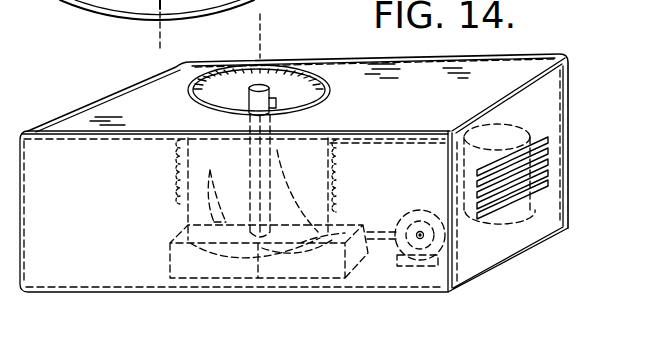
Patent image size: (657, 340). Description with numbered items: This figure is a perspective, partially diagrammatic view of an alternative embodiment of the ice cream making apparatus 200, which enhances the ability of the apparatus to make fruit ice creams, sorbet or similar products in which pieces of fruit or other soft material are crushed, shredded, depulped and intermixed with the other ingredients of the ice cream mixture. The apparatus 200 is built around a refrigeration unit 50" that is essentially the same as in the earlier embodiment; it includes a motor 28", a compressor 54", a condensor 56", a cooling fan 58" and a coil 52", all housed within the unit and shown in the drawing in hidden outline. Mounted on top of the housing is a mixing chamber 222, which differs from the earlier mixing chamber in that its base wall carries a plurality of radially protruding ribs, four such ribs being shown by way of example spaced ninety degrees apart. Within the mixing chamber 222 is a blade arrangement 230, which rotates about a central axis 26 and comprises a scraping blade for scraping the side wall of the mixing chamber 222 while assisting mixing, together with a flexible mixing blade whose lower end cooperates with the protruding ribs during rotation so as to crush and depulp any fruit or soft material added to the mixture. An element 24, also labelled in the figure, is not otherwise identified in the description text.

The apparatus 200 is at (160, 88).
The knob 24 is at (236, 103).
The mixing chamber 222 is at (229, 85).
The central axis 26 is at (266, 38).
The blade arrangement 230 is at (275, 99).
The refrigeration unit 50 is at (390, 156).
The coil 52 is at (166, 192).
The motor 28 is at (187, 268).
The compressor 54 is at (418, 247).
The condensor 56 is at (506, 134).
The cooling fan 58 is at (500, 223).